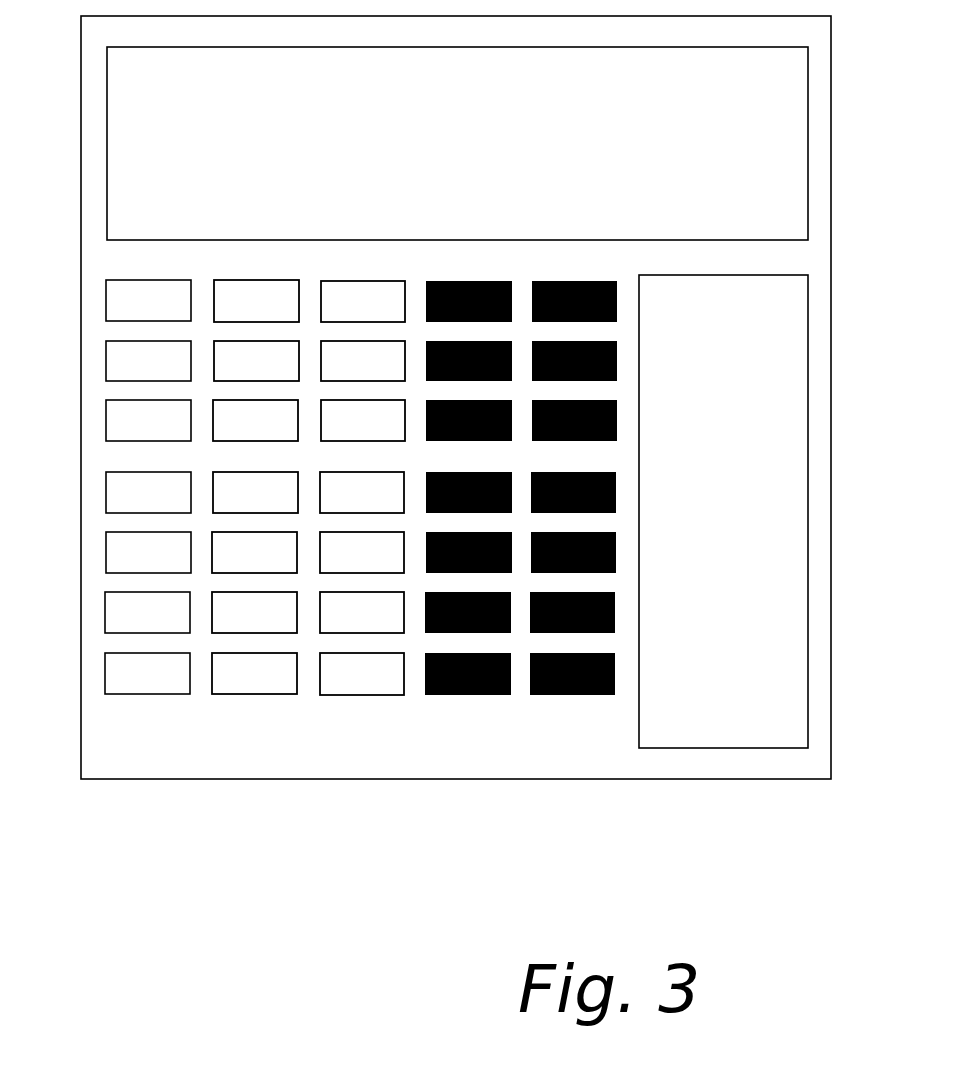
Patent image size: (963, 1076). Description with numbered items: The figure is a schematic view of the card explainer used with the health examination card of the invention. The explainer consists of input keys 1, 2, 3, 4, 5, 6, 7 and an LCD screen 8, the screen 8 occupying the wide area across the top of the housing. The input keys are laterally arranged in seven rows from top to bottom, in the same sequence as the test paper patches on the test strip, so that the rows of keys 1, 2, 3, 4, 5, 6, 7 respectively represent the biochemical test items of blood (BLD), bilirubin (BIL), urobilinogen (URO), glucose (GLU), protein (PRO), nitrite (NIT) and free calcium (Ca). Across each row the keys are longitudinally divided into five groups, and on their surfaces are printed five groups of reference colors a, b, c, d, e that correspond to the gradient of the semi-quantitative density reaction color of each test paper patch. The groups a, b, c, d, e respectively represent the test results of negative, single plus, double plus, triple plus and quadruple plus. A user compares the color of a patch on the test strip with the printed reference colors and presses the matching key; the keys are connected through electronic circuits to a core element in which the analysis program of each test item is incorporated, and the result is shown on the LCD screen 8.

The input key 1 is at (106, 296).
The input key 2 is at (106, 356).
The input key 3 is at (106, 417).
The input key 4 is at (106, 486).
The input key 5 is at (106, 546).
The input key 6 is at (105, 617).
The input key 7 is at (105, 679).
The LCD screen 8 is at (779, 145).
The reference color group a is at (146, 730).
The reference color group b is at (252, 730).
The reference color group c is at (362, 730).
The reference color group d is at (472, 730).
The reference color group e is at (584, 730).